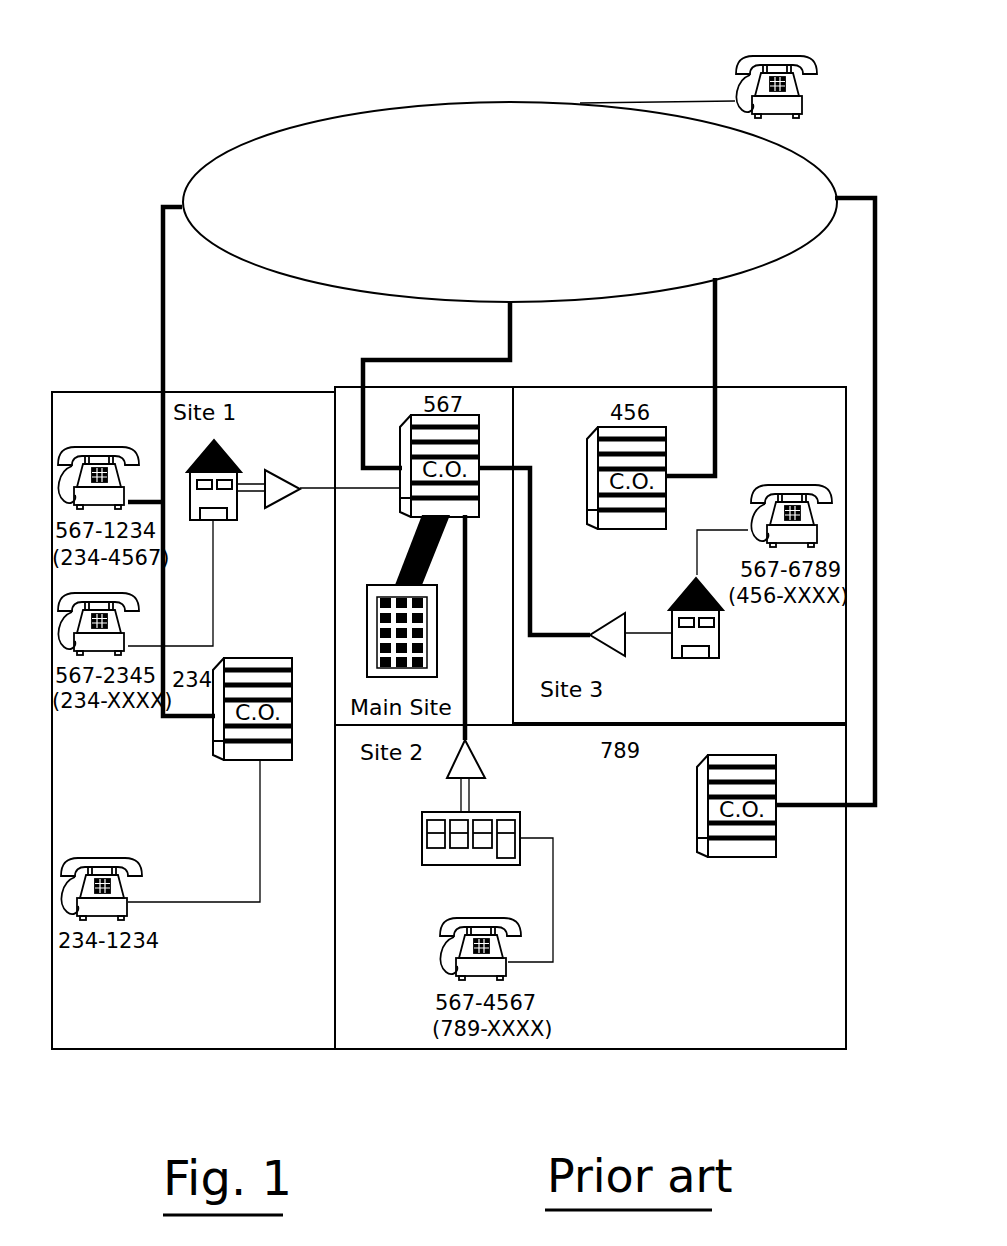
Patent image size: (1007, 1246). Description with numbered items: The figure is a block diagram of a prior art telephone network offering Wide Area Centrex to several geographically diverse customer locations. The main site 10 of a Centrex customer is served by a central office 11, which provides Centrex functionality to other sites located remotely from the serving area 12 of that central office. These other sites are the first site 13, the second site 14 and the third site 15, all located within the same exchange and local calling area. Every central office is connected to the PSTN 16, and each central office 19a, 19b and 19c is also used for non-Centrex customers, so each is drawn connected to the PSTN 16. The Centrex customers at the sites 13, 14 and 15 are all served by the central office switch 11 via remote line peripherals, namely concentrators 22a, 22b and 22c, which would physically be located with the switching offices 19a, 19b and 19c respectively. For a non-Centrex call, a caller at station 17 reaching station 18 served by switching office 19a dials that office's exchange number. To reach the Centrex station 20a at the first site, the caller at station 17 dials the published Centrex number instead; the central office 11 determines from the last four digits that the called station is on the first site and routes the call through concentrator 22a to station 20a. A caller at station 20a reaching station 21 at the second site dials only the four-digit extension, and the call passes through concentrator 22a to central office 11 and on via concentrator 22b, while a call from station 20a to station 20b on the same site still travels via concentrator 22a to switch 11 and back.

The main site 10 is at (385, 585).
The central office 11 is at (481, 515).
The serving area 12 is at (508, 690).
The site 1 13 is at (242, 512).
The site 2 14 is at (420, 850).
The site 3 15 is at (720, 640).
The PSTN 16 is at (628, 207).
The station 17 is at (752, 66).
The station 18 is at (103, 855).
The central office 19a is at (228, 762).
The central office 19b is at (590, 525).
The central office 19c is at (778, 858).
The station 20a is at (113, 446).
The station 20b is at (130, 598).
The station 21 is at (445, 932).
The concentrator 22a is at (273, 470).
The concentrator 22b is at (605, 614).
The concentrator 22c is at (482, 760).